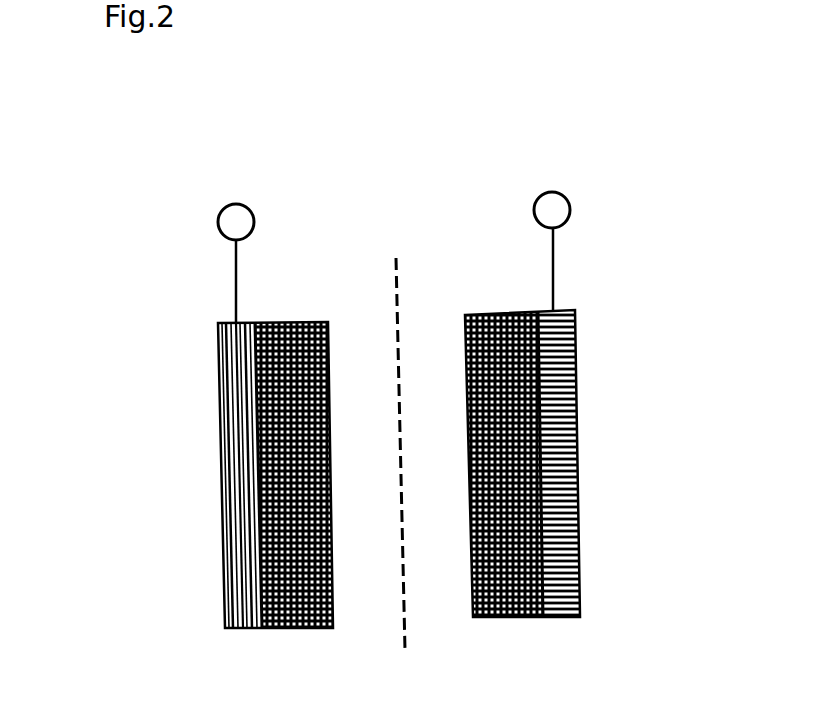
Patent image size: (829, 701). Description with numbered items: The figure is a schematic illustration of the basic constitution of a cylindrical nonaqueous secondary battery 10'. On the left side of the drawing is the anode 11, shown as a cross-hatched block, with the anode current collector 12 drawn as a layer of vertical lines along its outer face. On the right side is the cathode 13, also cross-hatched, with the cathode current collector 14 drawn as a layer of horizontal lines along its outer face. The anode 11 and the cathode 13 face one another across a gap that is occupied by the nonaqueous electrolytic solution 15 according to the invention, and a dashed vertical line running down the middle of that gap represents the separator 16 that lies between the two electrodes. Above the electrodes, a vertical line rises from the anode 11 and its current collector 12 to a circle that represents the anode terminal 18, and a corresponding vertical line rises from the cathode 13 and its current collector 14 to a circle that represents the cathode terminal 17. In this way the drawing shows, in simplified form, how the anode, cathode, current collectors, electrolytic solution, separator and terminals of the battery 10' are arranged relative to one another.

The cylindrical nonaqueous secondary battery 10' is at (389, 384).
The anode 11 is at (298, 629).
The anode current collector 12 is at (223, 595).
The cathode 13 is at (503, 618).
The cathode current collector 14 is at (560, 618).
The nonaqueous electrolytic solution 15 is at (444, 471).
The separator 16 is at (400, 290).
The cathode terminal 17 is at (567, 196).
The anode terminal 18 is at (254, 218).